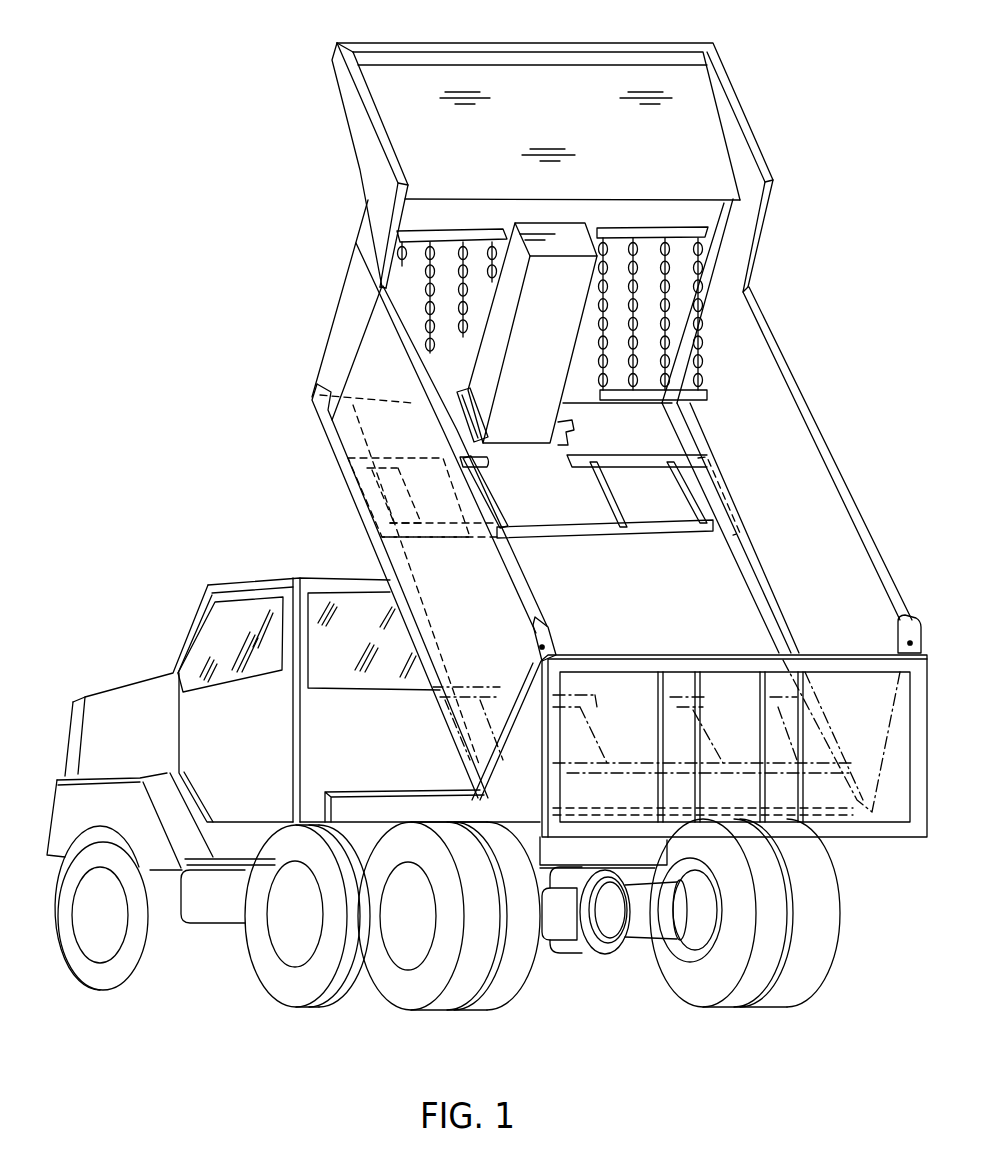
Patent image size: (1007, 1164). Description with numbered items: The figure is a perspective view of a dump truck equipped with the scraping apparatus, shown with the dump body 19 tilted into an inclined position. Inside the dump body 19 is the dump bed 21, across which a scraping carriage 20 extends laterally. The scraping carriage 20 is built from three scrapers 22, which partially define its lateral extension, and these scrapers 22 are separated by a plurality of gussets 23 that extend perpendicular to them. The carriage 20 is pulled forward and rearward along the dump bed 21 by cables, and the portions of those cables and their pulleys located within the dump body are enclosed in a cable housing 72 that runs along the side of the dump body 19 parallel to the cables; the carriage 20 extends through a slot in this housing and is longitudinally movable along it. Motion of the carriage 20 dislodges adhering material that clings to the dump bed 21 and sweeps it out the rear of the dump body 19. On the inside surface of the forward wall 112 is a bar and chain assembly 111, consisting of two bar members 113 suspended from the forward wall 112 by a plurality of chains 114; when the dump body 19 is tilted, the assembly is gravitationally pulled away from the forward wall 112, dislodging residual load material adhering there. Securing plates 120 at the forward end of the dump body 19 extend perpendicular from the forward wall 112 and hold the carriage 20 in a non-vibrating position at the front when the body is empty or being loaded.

The dump body 19 is at (322, 430).
The scraping carriage 20 is at (595, 540).
The dump bed 21 is at (720, 598).
The scrapers 22 is at (550, 530).
The gussets 23 is at (680, 497).
The cable housing 72 is at (695, 431).
The bar and chain assembly 111 is at (437, 230).
The forward wall 112 is at (463, 217).
The bar members 113 is at (612, 393).
The chains 114 is at (703, 308).
The securing plates 120 is at (476, 418).